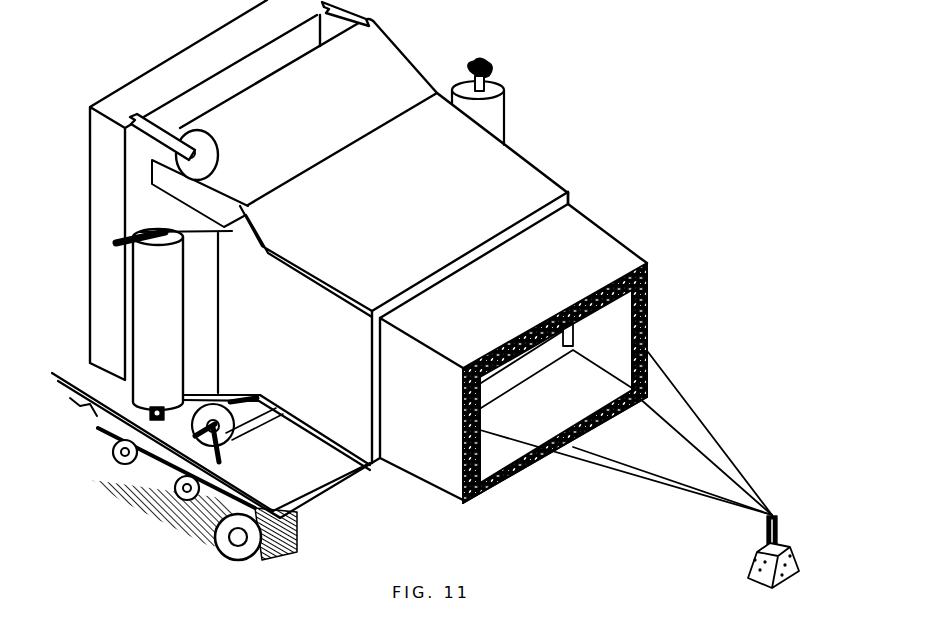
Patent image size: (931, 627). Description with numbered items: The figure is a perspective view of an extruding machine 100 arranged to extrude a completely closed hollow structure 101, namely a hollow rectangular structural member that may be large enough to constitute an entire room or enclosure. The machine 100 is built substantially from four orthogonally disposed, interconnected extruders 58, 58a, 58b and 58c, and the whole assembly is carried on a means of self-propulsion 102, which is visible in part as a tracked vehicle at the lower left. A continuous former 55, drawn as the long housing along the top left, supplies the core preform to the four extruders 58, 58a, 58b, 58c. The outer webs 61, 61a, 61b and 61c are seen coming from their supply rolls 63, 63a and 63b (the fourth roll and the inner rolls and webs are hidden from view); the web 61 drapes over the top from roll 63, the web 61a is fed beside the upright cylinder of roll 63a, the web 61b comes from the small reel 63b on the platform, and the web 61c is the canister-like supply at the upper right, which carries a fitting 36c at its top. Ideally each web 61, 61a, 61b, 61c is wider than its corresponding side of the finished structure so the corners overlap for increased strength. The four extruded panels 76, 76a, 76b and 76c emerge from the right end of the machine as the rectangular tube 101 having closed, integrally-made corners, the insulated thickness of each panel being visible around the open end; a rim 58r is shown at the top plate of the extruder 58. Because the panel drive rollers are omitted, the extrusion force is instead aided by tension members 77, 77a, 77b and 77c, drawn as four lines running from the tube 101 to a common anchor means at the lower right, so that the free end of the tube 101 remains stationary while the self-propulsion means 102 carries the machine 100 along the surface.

The continuous former 55 is at (175, 67).
The outer web 61 is at (413, 58).
The supply roll 63 is at (380, 22).
The outer web 61c is at (458, 104).
The valve 36c is at (493, 79).
The extruding machine 100 is at (515, 158).
The extruder 58 is at (543, 185).
The plate rim 58r is at (566, 208).
The hollow structure 101 is at (600, 233).
The extruded panel 76 is at (623, 263).
The extruded panel 76a is at (437, 460).
The extruded panel 76b is at (522, 468).
The extruded panel 76c is at (630, 322).
The extruder 58b is at (558, 360).
The extruder 58c is at (569, 331).
The outer web 61a is at (203, 280).
The supply roll 63a is at (178, 325).
The extruder 58a is at (358, 433).
The outer web 61b is at (247, 410).
The supply roll 63b is at (214, 446).
The means of self-propulsion 102 is at (145, 533).
The tension member 77 is at (668, 424).
The tension member 77a is at (607, 468).
The tension member 77b is at (640, 467).
The tension member 77c is at (690, 403).